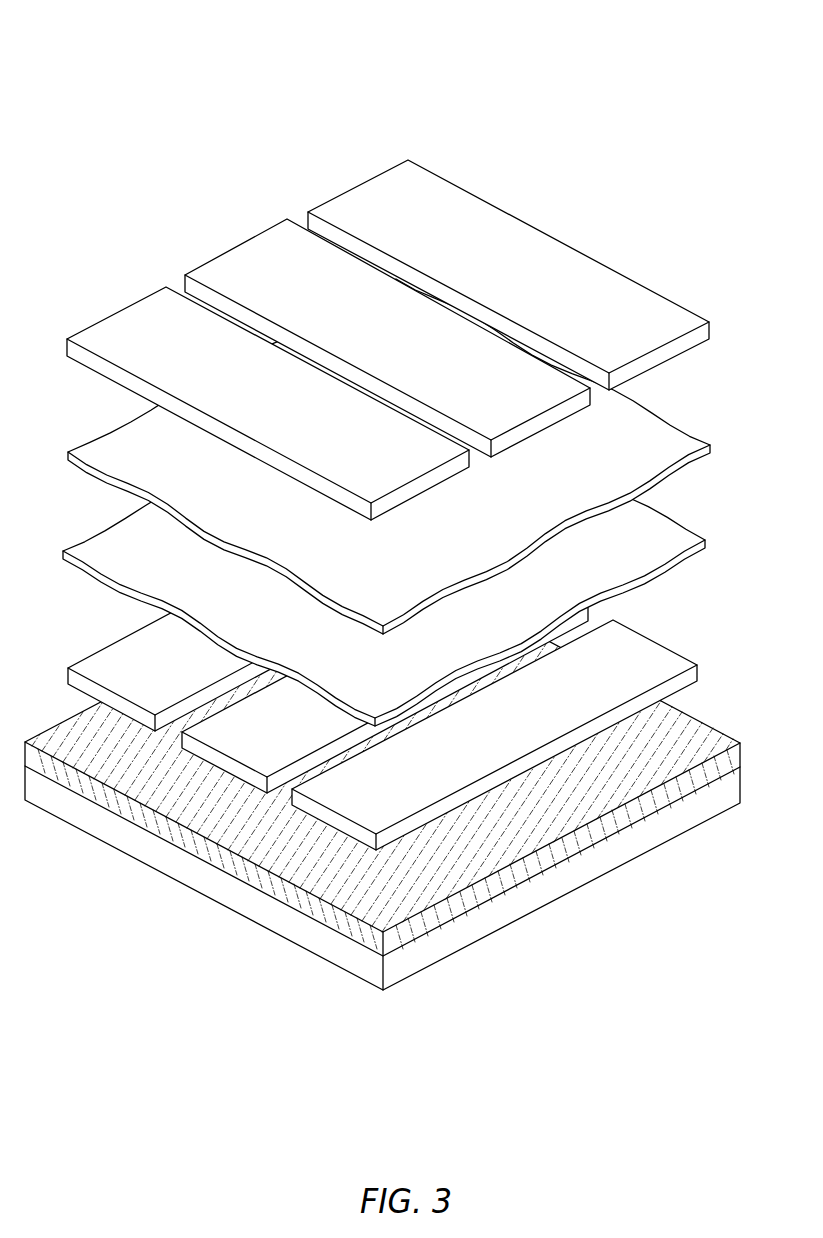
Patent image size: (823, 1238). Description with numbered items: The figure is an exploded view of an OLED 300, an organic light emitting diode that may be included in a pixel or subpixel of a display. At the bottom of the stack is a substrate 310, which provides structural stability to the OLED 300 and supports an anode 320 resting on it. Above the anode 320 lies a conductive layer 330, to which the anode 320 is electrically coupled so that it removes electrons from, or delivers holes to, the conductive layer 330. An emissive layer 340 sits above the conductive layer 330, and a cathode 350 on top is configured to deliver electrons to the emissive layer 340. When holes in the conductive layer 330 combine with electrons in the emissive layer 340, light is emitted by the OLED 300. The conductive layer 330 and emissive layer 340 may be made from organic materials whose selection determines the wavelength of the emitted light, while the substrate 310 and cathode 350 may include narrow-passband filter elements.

The OLED 300 is at (672, 37).
The substrate 310 is at (730, 757).
The anode 320 is at (678, 652).
The conductive layer 330 is at (682, 530).
The emissive layer 340 is at (693, 437).
The cathode 350 is at (707, 322).